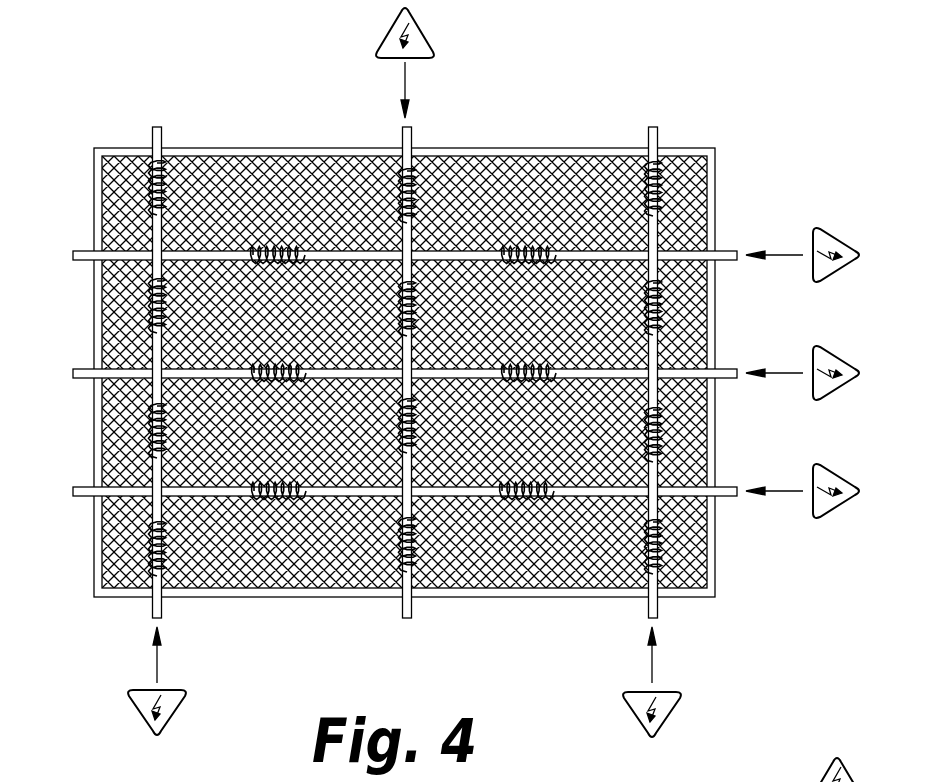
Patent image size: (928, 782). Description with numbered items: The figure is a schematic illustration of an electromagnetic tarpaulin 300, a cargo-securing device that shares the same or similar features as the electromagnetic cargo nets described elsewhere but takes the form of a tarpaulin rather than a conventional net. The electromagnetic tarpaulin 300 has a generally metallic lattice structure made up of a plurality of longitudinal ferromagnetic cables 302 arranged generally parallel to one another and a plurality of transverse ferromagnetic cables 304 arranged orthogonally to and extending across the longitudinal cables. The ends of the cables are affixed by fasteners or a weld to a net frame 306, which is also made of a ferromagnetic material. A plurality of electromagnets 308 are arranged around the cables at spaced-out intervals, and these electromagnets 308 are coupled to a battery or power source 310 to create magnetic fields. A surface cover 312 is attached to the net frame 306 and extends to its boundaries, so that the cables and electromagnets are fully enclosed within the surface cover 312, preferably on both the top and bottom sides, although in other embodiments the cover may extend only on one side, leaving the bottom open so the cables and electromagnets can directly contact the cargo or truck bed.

The electromagnetic tarpaulin 300 is at (83, 87).
The longitudinal ferromagnetic cables 302 is at (652, 471).
The transverse ferromagnetic cables 304 is at (592, 492).
The net frame 306 is at (712, 196).
The electromagnets 308 is at (390, 199).
The battery or power source 310 is at (838, 240).
The surface cover 312 is at (255, 193).